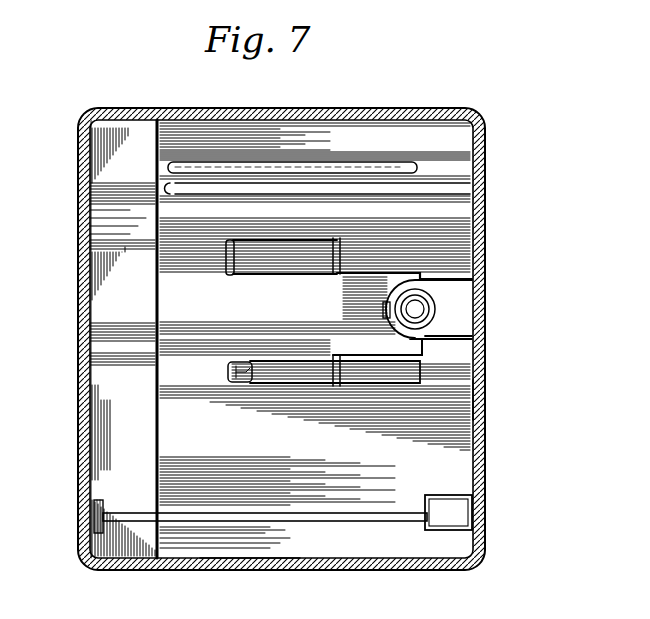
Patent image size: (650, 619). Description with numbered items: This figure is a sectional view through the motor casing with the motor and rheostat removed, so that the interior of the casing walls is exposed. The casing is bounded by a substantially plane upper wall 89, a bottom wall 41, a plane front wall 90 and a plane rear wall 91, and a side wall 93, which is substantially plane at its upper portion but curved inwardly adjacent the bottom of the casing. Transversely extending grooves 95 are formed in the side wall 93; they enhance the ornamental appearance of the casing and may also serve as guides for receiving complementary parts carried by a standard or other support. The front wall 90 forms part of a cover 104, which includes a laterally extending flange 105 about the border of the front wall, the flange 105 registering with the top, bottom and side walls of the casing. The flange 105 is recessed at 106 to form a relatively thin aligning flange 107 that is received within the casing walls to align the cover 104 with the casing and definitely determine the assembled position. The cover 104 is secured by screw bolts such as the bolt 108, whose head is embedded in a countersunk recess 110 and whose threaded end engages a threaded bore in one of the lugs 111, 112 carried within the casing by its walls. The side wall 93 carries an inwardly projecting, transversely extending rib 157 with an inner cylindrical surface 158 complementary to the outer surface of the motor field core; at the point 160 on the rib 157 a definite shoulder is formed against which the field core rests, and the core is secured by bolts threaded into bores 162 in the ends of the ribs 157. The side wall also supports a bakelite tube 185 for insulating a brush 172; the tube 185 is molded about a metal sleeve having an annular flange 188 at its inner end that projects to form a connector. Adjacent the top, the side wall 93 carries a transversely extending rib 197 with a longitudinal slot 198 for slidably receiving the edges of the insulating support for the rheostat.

The bottom wall 41 is at (237, 562).
The upper wall 89 is at (303, 110).
The front wall 90 is at (80, 483).
The rear wall 91 is at (463, 447).
The side wall 93 is at (457, 400).
The transversely extending grooves 95 is at (105, 210).
The cover 104 is at (78, 275).
The laterally extending flange 105 is at (97, 108).
The recess 106 is at (152, 90).
The aligning flange 107 is at (178, 118).
The screw bolt 108 is at (317, 514).
The countersunk recess 110 is at (474, 111).
The lug 111 is at (453, 507).
The lug 112 is at (233, 268).
The rib 157 is at (458, 254).
The inner cylindrical surface 158 is at (268, 262).
The shoulder point 160 is at (330, 363).
The bore 162 is at (232, 386).
The brush 172 is at (430, 305).
The bakelite tube 185 is at (423, 330).
The annular flange 188 is at (428, 316).
The rib 197 is at (455, 164).
The longitudinal slot 198 is at (347, 165).